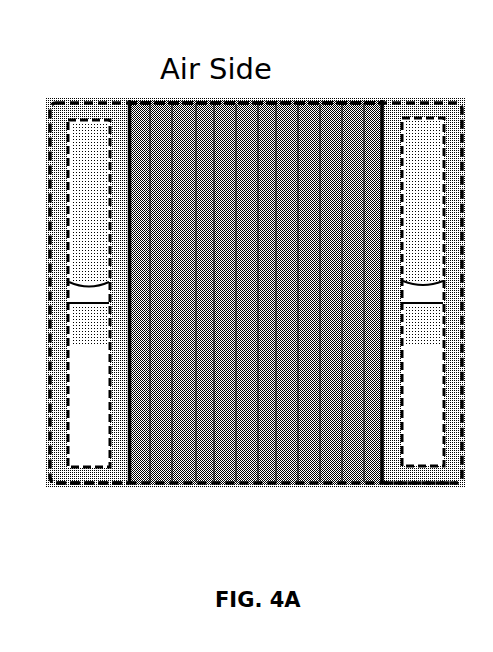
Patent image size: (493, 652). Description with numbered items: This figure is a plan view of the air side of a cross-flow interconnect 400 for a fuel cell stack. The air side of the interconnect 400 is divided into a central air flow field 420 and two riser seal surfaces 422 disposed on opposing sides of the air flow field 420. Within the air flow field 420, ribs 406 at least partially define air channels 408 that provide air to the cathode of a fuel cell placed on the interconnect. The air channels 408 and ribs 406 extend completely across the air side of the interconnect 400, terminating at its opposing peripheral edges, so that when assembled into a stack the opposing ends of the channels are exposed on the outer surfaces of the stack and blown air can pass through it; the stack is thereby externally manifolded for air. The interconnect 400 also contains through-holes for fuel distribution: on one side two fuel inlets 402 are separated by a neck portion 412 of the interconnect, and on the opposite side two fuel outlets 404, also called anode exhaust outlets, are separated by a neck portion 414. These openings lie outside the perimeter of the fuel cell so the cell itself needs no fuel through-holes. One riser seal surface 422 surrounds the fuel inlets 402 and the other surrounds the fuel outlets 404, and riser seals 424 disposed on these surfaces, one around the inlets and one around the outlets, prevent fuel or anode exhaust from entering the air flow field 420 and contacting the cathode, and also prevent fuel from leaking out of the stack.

The interconnect 400 is at (137, 68).
The fuel inlets 402 is at (441, 204).
The fuel outlets 404 is at (109, 188).
The ribs 406 is at (293, 175).
The air channels 408 is at (200, 430).
The neck portion 412 is at (431, 305).
The neck portion 414 is at (88, 290).
The air flow field 420 is at (263, 97).
The riser seal surfaces 422 is at (88, 489).
The riser seals 424 is at (85, 113).